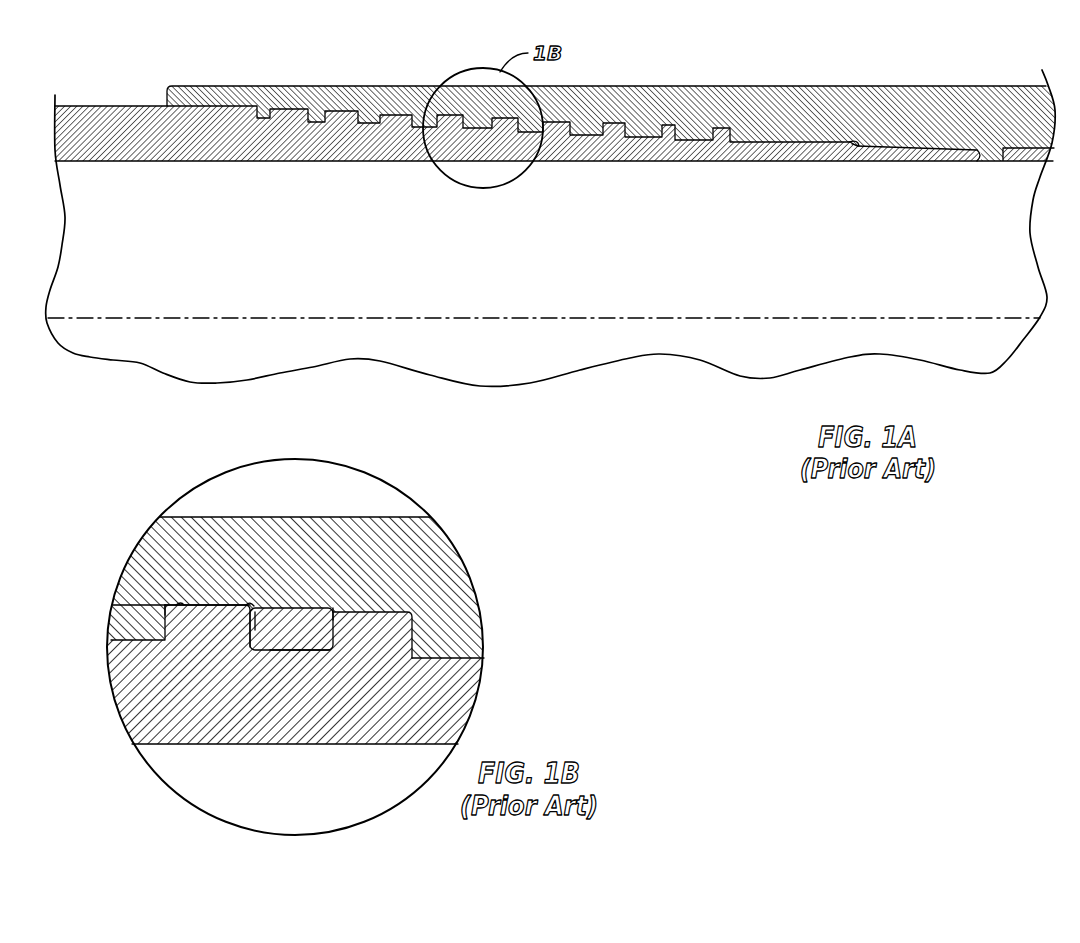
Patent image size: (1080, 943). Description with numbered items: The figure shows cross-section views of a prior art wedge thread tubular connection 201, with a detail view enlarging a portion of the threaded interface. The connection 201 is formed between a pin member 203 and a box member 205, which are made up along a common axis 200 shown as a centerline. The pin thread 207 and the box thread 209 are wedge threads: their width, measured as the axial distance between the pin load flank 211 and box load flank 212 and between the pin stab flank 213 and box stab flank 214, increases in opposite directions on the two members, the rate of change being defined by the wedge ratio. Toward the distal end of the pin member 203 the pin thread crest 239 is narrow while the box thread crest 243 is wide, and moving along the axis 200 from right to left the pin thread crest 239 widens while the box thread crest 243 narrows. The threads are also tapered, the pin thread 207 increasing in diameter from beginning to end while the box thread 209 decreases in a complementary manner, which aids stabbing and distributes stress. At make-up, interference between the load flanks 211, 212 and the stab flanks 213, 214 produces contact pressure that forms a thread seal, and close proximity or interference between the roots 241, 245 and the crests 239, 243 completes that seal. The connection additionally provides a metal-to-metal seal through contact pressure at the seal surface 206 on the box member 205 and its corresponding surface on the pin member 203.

In FIG. 1A, the axis 200 is at (314, 318).
In FIG. 1A, the connection 201 is at (150, 52).
In FIG. 1A, the pin member 203 is at (112, 144).
In FIG. 1B, the pin member 203 is at (190, 734).
In FIG. 1A, the box member 205 is at (951, 117).
In FIG. 1B, the box member 205 is at (428, 547).
In FIG. 1A, the seal surface 206 is at (861, 150).
In FIG. 1B, the pin thread 207 is at (228, 637).
In FIG. 1B, the box thread 209 is at (313, 637).
In FIG. 1B, the pin load flank 211 is at (111, 605).
In FIG. 1B, the box load flank 212 is at (163, 620).
In FIG. 1B, the pin stab flank 213 is at (253, 612).
In FIG. 1B, the box stab flank 214 is at (256, 627).
In FIG. 1B, the pin thread crest 239 is at (180, 605).
In FIG. 1B, the root 241 is at (285, 653).
In FIG. 1B, the box thread crest 243 is at (321, 649).
In FIG. 1B, the root 245 is at (249, 606).